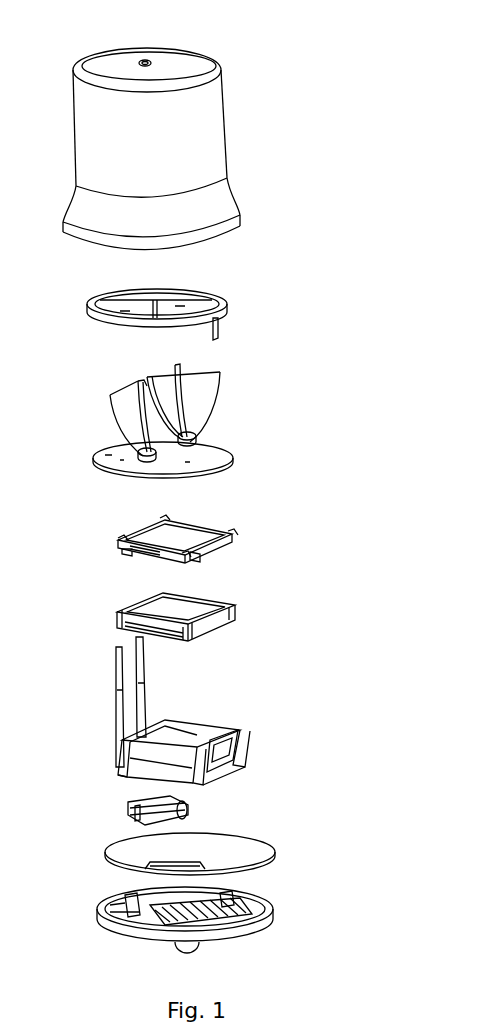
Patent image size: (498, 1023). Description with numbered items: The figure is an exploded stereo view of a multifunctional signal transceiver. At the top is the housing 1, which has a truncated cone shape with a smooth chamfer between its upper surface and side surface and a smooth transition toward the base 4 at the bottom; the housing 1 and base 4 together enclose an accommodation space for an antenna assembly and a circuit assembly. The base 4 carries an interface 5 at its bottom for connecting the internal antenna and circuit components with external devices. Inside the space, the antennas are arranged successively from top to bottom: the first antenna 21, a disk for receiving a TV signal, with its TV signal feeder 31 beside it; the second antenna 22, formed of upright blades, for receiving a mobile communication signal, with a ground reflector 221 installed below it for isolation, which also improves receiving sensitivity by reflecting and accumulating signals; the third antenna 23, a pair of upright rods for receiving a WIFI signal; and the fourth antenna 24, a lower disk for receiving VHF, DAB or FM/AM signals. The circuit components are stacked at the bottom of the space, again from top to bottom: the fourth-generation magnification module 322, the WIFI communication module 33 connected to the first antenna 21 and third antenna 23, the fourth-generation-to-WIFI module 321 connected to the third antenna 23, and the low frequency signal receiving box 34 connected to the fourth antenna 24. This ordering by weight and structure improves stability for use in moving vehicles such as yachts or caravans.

The housing 1 is at (202, 173).
The first antenna 21 is at (213, 295).
The TV signal feeder 31 is at (218, 330).
The second antenna 22 is at (202, 405).
The ground reflector 221 is at (205, 460).
The 4G magnification module 322 is at (185, 542).
The WIFI communication module 33 is at (200, 603).
The third antenna 23 is at (122, 699).
The 4G-to-WIFI module 321 is at (213, 737).
The low frequency signal receiving box 34 is at (128, 803).
The fourth antenna 24 is at (275, 852).
The base 4 is at (232, 910).
The interface 5 is at (193, 948).